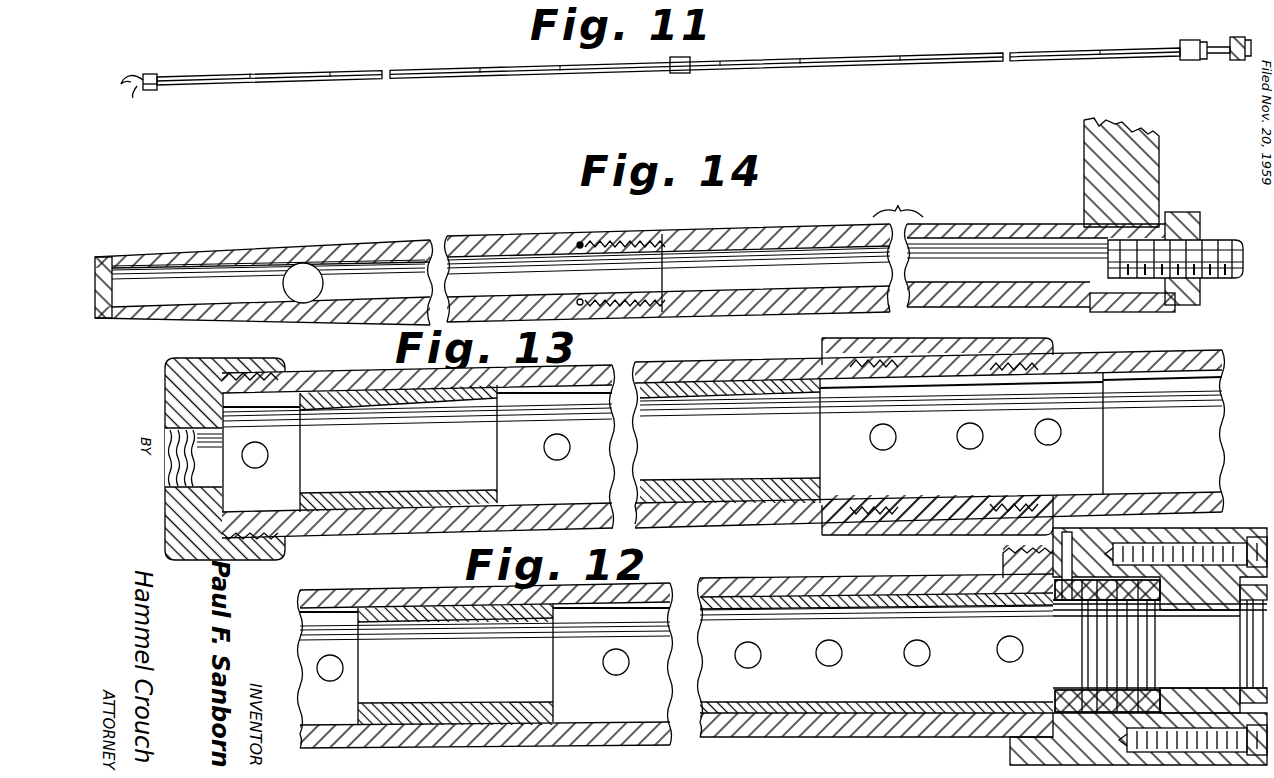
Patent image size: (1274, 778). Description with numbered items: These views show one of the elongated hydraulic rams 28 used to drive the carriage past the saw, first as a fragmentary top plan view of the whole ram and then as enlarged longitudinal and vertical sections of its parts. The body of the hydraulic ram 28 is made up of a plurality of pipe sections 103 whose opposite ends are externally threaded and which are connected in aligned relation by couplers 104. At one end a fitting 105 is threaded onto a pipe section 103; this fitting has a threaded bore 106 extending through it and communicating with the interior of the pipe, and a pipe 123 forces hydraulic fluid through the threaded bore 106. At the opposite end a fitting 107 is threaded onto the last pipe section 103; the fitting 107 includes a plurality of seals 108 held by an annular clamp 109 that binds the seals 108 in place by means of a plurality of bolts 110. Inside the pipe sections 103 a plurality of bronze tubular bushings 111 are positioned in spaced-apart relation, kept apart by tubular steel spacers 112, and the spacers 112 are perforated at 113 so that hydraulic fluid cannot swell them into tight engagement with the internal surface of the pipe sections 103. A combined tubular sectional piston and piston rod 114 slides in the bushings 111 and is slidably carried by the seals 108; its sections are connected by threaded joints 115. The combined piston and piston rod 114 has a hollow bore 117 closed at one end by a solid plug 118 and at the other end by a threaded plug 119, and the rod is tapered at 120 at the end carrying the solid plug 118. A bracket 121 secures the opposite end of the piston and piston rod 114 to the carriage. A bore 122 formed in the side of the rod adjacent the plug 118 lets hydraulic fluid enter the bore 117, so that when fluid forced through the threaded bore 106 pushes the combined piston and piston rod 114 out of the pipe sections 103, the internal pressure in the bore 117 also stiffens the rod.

In FIG. 11, the hydraulic ram 28 is at (910, 55).
In FIG. 13, the pipe sections 103 is at (698, 375).
In FIG. 12, the pipe sections 103 is at (770, 580).
In FIG. 11, the couplers 104 is at (680, 74).
In FIG. 13, the couplers 104 is at (928, 348).
In FIG. 11, the fitting 105 is at (152, 78).
In FIG. 13, the fitting 105 is at (168, 388).
In FIG. 13, the threaded bore 106 is at (167, 477).
In FIG. 11, the fitting 107 is at (1196, 60).
In FIG. 12, the fitting 107 is at (1202, 530).
In FIG. 12, the seals 108 is at (1144, 670).
In FIG. 12, the annular clamp 109 is at (1212, 602).
In FIG. 12, the bolts 110 is at (1217, 536).
In FIG. 13, the bronze tubular bushings 111 is at (437, 408).
In FIG. 12, the bronze tubular bushings 111 is at (470, 620).
In FIG. 13, the tubular steel spacers 112 is at (276, 408).
In FIG. 12, the tubular steel spacers 112 is at (310, 616).
In FIG. 13, the perforations 113 is at (262, 468).
In FIG. 12, the perforations 113 is at (330, 681).
In FIG. 14, the combined tubular sectional piston and piston rod 114 is at (843, 204).
In FIG. 14, the threaded joints 115 is at (627, 241).
In FIG. 14, the bore 117 is at (713, 262).
In FIG. 14, the solid plug 118 is at (122, 279).
In FIG. 14, the threaded plug 119 is at (1107, 260).
In FIG. 14, the taper 120 is at (218, 250).
In FIG. 14, the bracket 121 is at (1085, 168).
In FIG. 14, the bore 122 is at (365, 268).
In FIG. 11, the pipe 123 is at (140, 92).